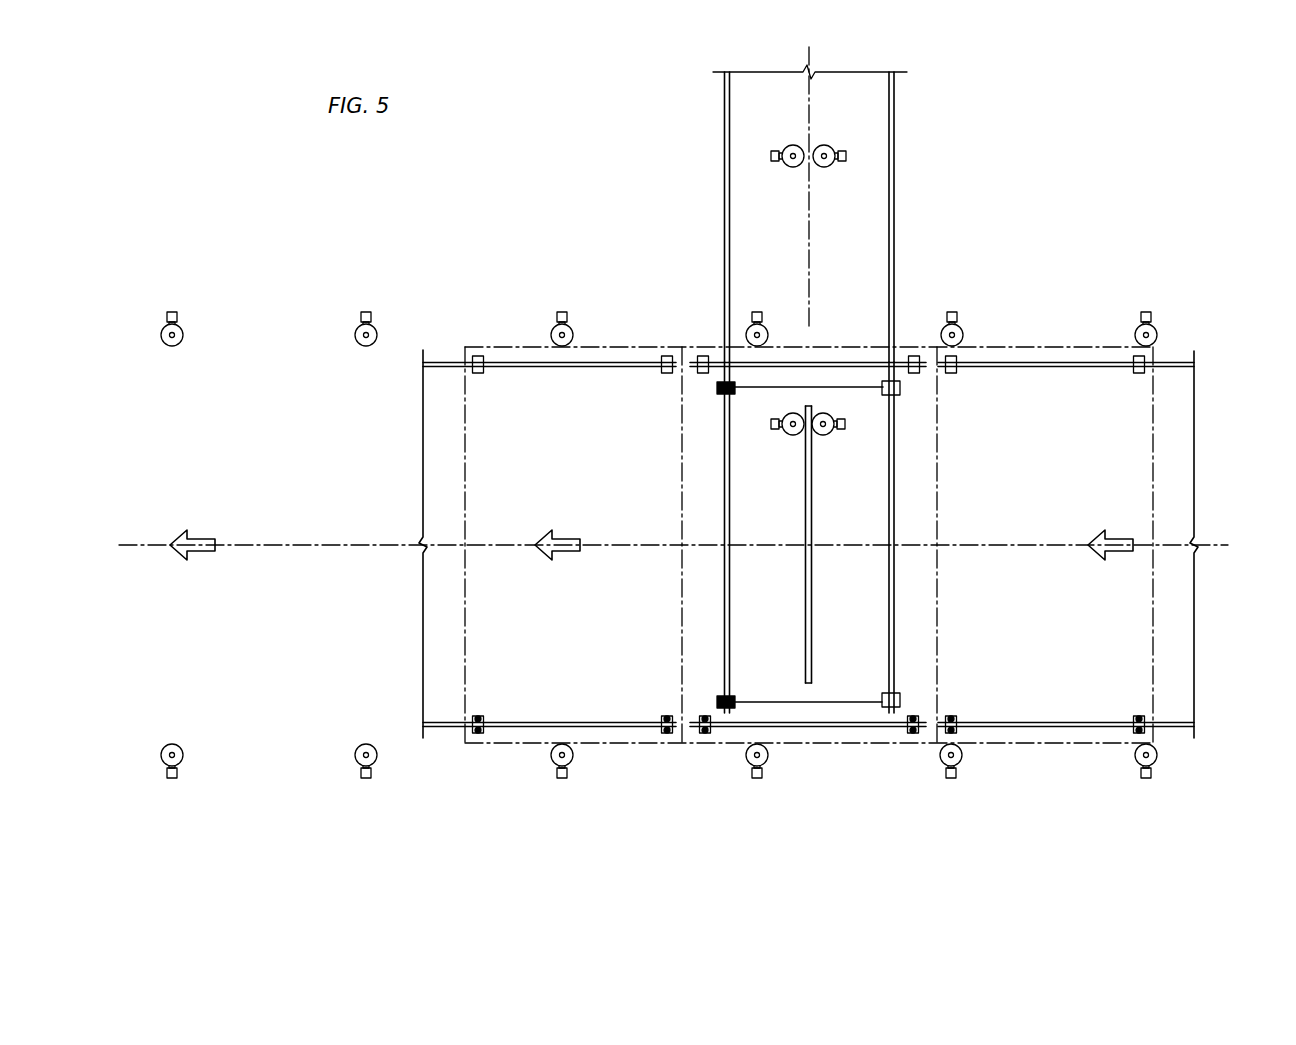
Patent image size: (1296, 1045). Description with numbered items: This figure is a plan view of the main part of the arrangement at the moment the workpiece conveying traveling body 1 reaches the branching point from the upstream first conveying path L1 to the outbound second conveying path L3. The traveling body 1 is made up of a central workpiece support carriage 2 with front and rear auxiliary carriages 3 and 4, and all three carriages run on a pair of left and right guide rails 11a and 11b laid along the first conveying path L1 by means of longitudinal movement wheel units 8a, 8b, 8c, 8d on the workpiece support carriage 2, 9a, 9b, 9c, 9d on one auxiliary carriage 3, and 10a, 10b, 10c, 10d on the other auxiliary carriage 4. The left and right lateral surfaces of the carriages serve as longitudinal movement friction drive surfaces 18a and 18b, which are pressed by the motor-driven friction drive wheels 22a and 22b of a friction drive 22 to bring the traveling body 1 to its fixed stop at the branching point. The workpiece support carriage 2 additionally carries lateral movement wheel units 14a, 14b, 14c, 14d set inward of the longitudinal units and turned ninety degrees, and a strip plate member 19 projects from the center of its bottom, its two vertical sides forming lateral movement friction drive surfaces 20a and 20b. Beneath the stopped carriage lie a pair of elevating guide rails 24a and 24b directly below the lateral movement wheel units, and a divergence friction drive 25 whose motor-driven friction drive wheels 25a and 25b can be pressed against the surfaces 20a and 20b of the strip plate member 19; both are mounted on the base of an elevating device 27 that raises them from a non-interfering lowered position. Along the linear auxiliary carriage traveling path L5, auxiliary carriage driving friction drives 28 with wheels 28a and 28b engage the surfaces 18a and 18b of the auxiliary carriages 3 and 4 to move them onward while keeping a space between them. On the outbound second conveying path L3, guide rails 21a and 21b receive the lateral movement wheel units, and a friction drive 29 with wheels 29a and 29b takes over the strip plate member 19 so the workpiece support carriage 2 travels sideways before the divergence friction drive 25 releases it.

The workpiece conveying traveling body 1 is at (1162, 452).
The workpiece support carriage 2 is at (930, 587).
The auxiliary carriage 3 is at (463, 512).
The auxiliary carriage 4 is at (1142, 613).
The longitudinal movement wheel unit 8a is at (705, 741).
The longitudinal movement wheel unit 8b is at (913, 741).
The longitudinal movement wheel unit 8c is at (702, 383).
The longitudinal movement wheel unit 8d is at (918, 383).
The longitudinal movement wheel unit 9a is at (478, 740).
The longitudinal movement wheel unit 9b is at (667, 706).
The longitudinal movement wheel unit 9c is at (478, 350).
The longitudinal movement wheel unit 9d is at (665, 380).
The longitudinal movement wheel unit 10a is at (962, 714).
The longitudinal movement wheel unit 10b is at (1150, 710).
The longitudinal movement wheel unit 10c is at (962, 378).
The longitudinal movement wheel unit 10d is at (1150, 378).
The guide rail 11a is at (533, 719).
The guide rail 11b is at (545, 369).
The lateral movement wheel unit 14a is at (714, 400).
The lateral movement wheel unit 14b is at (742, 697).
The lateral movement wheel unit 14c is at (905, 403).
The lateral movement wheel unit 14d is at (876, 697).
The longitudinal movement friction drive surface 18a is at (600, 745).
The longitudinal movement friction drive surface 18b is at (517, 345).
The strip plate member 19 is at (812, 544).
The lateral movement friction drive surface 20a is at (805, 583).
The lateral movement friction drive surface 20b is at (812, 568).
The guide rail 21a is at (724, 262).
The guide rail 21b is at (893, 241).
The friction drive 22 is at (1188, 537).
The motor-driven friction drive wheel 22a is at (1157, 758).
The motor-driven friction drive wheel 22b is at (1157, 335).
The elevating guide rail 24a is at (724, 520).
The elevating guide rail 24b is at (894, 516).
The divergence friction drive 25 is at (812, 396).
The motor-driven friction drive wheel 25a is at (793, 437).
The motor-driven friction drive wheel 25b is at (823, 437).
The elevating device 27 is at (844, 763).
The auxiliary carriage driving friction drive 28 is at (598, 538).
The motor-driven friction drive wheel 28a is at (362, 744).
The motor-driven friction drive wheel 28b is at (172, 346).
The friction drive 29 is at (802, 130).
The motor-driven friction drive wheel 29a is at (785, 148).
The motor-driven friction drive wheel 29b is at (824, 145).
The upstream first conveying path L1 is at (1045, 538).
The outbound second conveying path L3 is at (800, 214).
The auxiliary carriage traveling path L5 is at (352, 555).